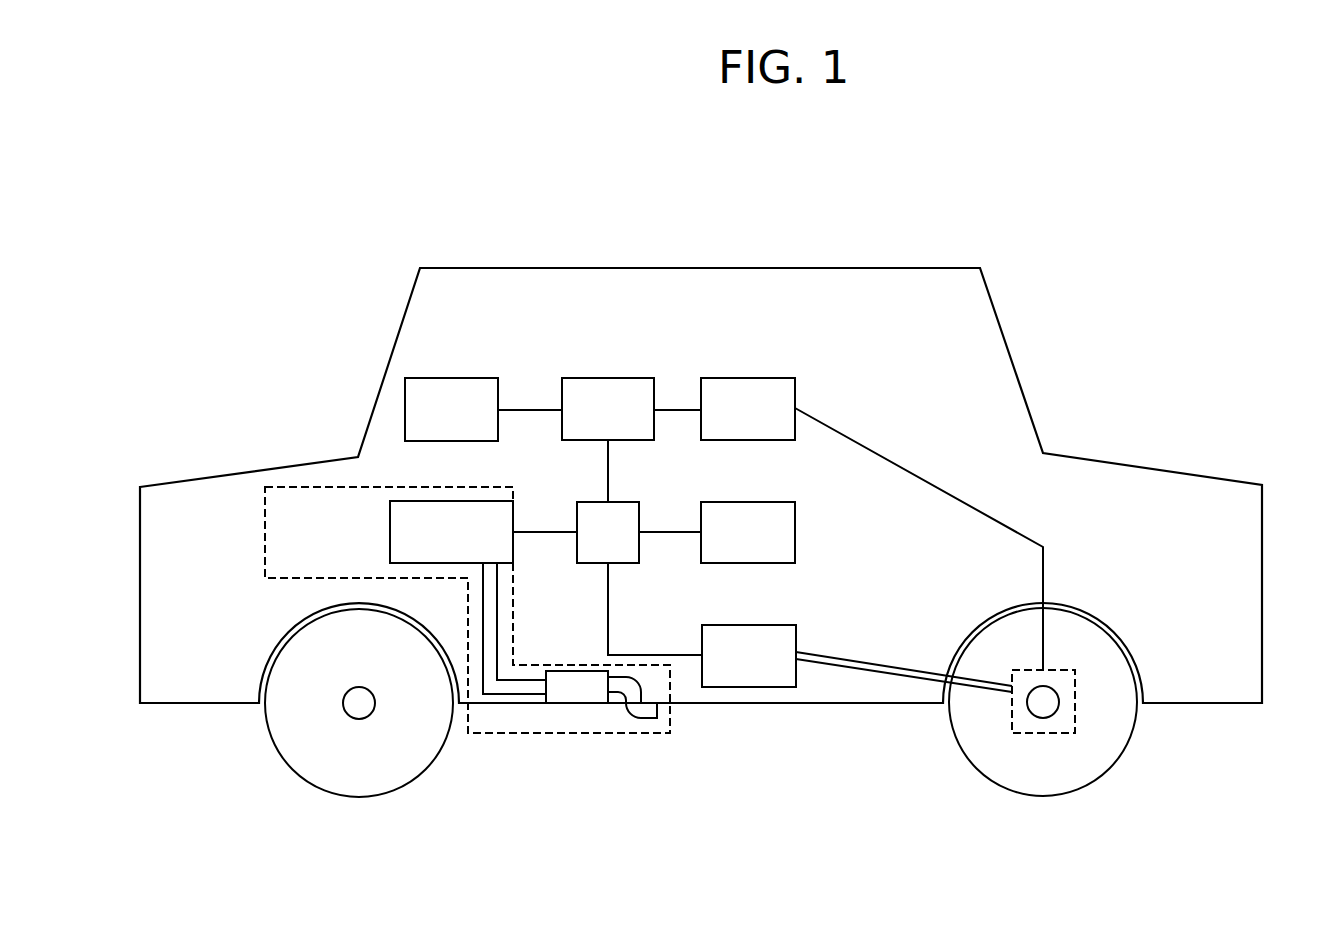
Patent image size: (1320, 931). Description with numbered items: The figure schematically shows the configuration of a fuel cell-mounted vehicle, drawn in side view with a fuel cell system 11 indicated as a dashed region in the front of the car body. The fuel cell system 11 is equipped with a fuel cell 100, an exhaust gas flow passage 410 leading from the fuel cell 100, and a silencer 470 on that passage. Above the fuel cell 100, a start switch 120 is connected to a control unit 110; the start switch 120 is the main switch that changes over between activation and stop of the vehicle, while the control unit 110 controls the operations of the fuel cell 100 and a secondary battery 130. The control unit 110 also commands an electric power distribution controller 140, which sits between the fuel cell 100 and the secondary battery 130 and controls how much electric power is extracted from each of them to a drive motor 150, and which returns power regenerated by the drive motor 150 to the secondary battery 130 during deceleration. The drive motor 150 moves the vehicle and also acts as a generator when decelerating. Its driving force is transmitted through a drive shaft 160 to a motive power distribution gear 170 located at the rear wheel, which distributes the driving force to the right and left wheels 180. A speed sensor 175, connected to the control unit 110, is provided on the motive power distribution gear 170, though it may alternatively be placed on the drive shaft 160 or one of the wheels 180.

The fuel cell system 11 is at (313, 487).
The fuel cell 100 is at (473, 547).
The control unit 110 is at (629, 425).
The start switch 120 is at (473, 425).
The secondary battery 130 is at (769, 547).
The electric power distribution controller 140 is at (629, 547).
The drive motor 150 is at (770, 670).
The drive shaft 160 is at (898, 678).
The motive power distribution gear 170 is at (1027, 735).
The speed sensor 175 is at (769, 425).
The wheels 180 is at (440, 753).
The exhaust gas flow passage 410 is at (497, 697).
The silencer 470 is at (599, 697).